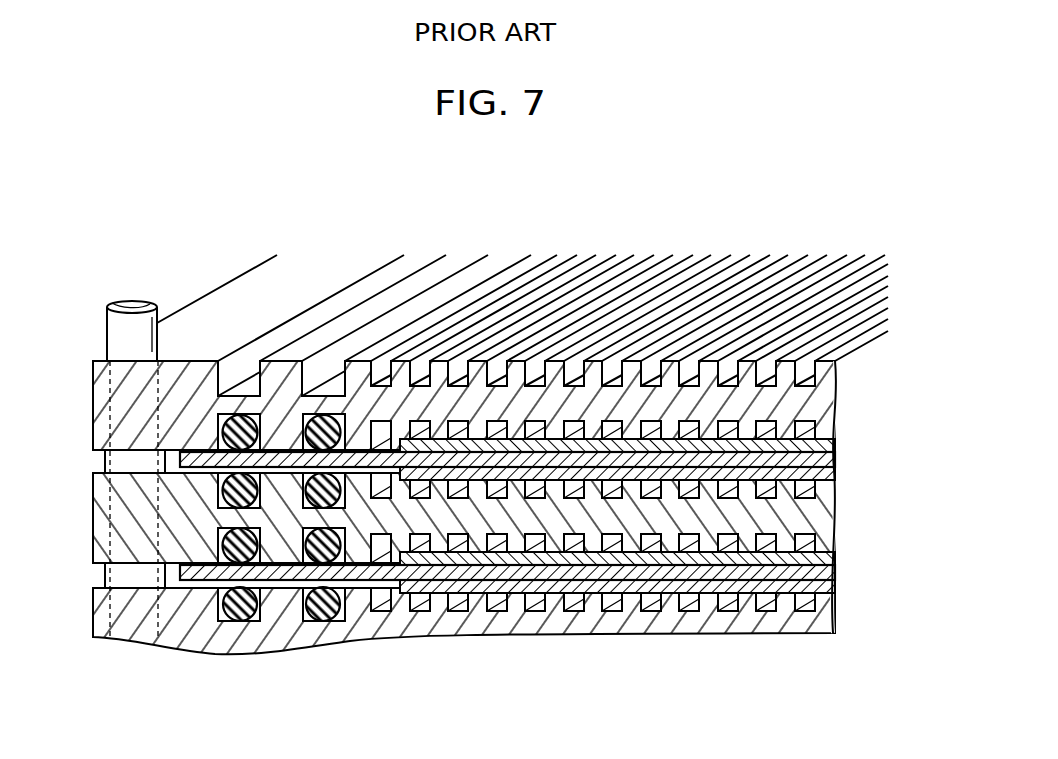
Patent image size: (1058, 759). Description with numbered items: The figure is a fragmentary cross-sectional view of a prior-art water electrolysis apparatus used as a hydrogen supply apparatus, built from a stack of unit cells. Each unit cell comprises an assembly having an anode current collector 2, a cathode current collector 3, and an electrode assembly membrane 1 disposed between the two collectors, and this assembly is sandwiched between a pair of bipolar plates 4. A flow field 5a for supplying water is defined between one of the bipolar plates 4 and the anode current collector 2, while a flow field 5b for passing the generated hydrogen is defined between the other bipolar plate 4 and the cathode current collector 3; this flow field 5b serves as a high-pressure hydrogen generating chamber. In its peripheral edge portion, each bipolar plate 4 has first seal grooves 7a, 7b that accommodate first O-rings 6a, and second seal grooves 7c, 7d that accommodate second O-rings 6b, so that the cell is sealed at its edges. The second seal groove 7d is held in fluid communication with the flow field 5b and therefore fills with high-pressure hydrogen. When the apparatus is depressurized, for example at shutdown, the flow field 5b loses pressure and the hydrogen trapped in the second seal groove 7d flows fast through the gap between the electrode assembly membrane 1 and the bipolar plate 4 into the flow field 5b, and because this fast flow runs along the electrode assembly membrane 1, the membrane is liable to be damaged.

The electrode assembly membrane 1 is at (828, 459).
The anode current collector 2 is at (830, 484).
The cathode current collector 3 is at (828, 447).
The bipolar plate 4 is at (98, 421).
The flow field 5a is at (730, 487).
The flow field 5b is at (733, 430).
The first O-ring 6a is at (257, 619).
The second O-ring 6b is at (305, 618).
The first seal groove 7a is at (262, 626).
The first seal groove 7b is at (222, 565).
The second seal groove 7c is at (325, 619).
The second seal groove 7d is at (376, 606).